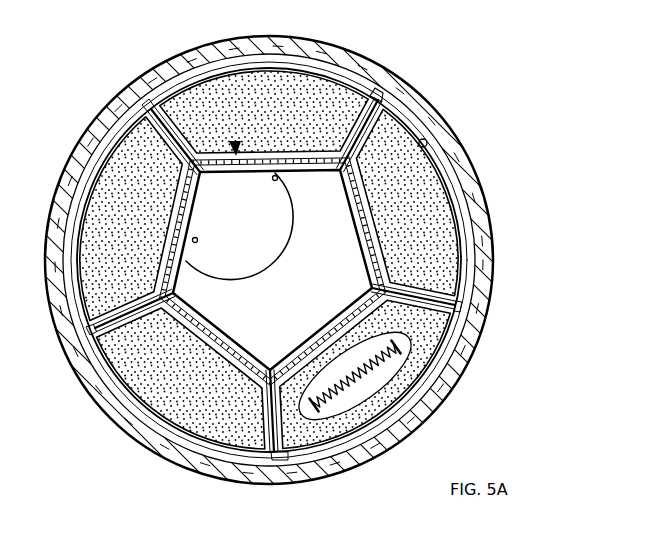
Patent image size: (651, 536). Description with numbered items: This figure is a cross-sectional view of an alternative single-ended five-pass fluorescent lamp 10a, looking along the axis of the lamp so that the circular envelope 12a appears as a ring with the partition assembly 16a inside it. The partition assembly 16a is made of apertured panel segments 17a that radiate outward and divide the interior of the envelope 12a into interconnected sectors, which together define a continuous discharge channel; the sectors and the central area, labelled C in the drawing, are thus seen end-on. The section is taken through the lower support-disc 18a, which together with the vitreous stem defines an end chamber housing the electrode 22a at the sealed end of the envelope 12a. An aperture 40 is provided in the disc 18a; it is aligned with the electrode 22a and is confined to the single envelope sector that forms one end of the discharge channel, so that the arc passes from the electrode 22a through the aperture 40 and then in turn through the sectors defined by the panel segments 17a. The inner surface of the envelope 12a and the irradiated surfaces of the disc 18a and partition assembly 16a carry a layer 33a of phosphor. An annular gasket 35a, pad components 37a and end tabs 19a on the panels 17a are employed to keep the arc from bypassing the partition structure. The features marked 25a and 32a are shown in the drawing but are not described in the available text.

The single-ended five-pass fluorescent lamp 10a is at (548, 82).
The envelope 12a is at (197, 53).
The partition assembly 16a is at (157, 73).
The apertured panel segments 17a is at (441, 296).
The lower support-disc 18a is at (150, 167).
The end tabs 19a is at (368, 92).
The electrode 22a is at (355, 412).
The attachment points 25a is at (275, 181).
The arcuate member 32a is at (265, 258).
The layer of phosphor 33a is at (427, 142).
The annular gasket 35a is at (167, 418).
The pad component 37a is at (348, 110).
The aperture 40 is at (383, 388).
The chamber C is at (332, 250).